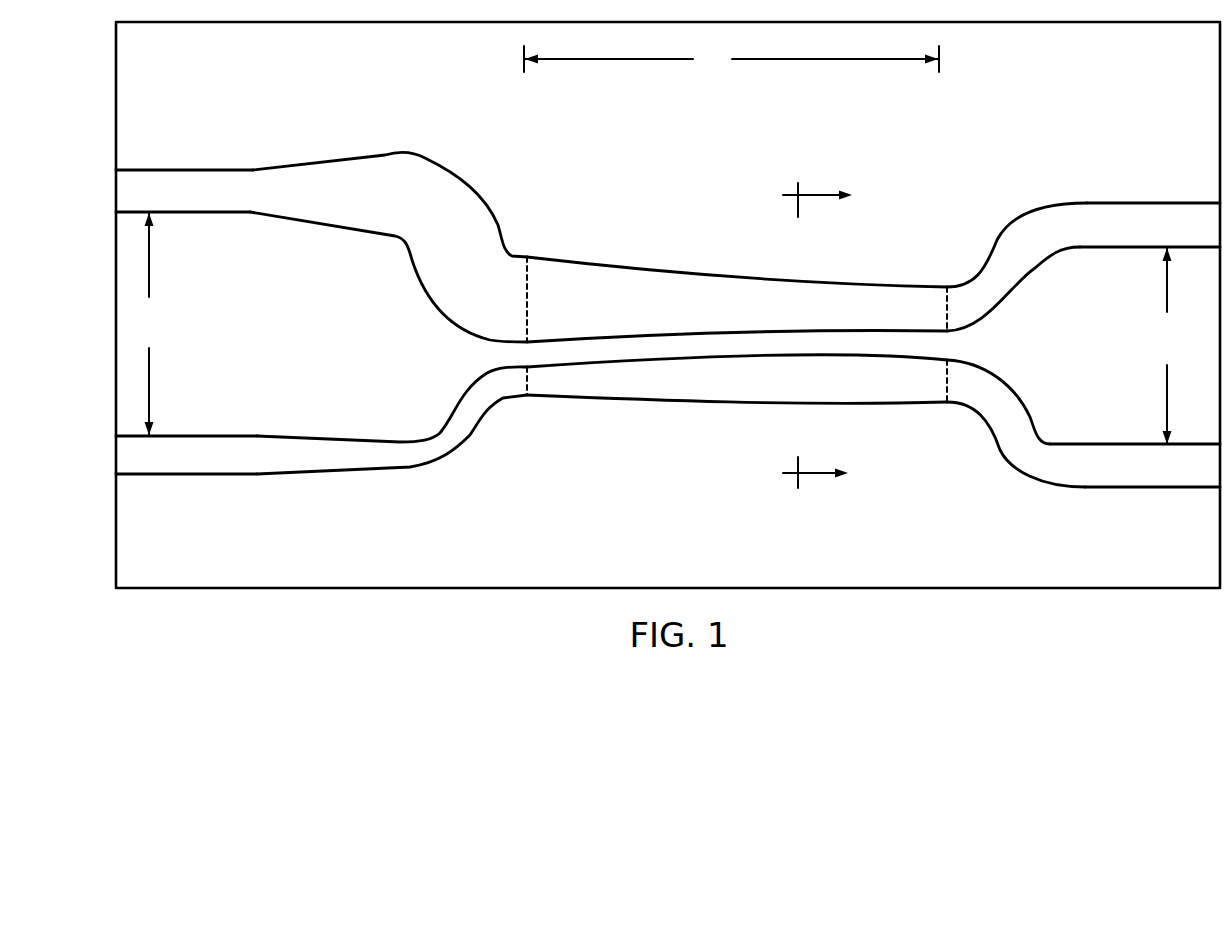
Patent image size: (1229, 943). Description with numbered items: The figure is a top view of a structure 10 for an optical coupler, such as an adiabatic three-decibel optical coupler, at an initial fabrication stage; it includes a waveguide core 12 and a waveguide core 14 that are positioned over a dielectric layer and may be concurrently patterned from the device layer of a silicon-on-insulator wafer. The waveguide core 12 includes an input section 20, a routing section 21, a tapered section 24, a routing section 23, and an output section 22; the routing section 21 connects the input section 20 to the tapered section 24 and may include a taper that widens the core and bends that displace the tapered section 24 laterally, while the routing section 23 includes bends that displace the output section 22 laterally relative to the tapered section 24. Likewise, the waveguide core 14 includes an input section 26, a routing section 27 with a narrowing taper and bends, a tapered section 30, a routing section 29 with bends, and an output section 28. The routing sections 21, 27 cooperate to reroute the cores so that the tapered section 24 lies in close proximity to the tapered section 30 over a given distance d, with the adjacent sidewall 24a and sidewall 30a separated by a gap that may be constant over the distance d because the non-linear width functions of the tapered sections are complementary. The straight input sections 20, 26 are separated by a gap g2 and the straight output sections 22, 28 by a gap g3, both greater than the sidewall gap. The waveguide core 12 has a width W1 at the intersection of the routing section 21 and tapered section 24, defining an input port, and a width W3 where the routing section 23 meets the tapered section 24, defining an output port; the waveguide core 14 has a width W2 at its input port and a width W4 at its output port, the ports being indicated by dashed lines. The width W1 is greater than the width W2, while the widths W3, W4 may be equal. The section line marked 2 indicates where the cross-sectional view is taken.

The structure 10 is at (216, 84).
The waveguide core 12 is at (326, 148).
The waveguide core 14 is at (293, 425).
The input section 20 is at (183, 192).
The routing section 21 is at (390, 185).
The output section 22 is at (1147, 225).
The routing section 23 is at (1010, 252).
The tapered section 24 is at (672, 292).
The sidewall 24a is at (773, 328).
The input section 26 is at (195, 458).
The routing section 27 is at (403, 457).
The output section 28 is at (1135, 473).
The routing section 29 is at (982, 403).
The tapered section 30 is at (750, 385).
The sidewall 30a is at (830, 352).
The width W1 is at (549, 299).
The width W2 is at (549, 381).
The width W3 is at (925, 309).
The width W4 is at (925, 381).
The gap g2 is at (147, 324).
The gap g3 is at (1167, 346).
The distance d is at (731, 59).
The section line for FIG. 2 is at (832, 335).